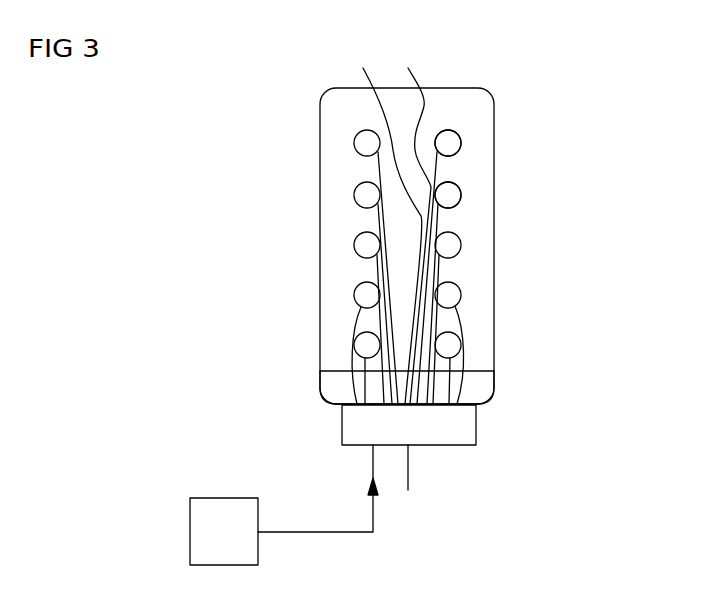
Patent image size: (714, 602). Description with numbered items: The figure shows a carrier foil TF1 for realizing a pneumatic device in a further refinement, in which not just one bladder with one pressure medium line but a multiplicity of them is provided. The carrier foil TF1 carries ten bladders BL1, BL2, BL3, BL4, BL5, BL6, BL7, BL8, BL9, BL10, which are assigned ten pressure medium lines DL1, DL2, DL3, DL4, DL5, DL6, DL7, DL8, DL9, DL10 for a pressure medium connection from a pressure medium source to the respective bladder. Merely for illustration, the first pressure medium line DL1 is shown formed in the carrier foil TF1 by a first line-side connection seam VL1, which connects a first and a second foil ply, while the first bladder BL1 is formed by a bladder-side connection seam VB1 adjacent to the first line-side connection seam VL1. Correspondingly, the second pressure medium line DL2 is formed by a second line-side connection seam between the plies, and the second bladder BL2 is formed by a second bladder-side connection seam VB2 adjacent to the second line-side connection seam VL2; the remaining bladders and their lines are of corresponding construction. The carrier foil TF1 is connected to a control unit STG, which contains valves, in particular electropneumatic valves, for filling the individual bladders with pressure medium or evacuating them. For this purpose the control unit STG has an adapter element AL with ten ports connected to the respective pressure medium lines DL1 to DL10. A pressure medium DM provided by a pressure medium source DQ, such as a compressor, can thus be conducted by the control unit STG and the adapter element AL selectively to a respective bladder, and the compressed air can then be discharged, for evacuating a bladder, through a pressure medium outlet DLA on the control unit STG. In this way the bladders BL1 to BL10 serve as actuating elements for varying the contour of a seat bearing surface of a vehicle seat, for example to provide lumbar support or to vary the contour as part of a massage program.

The carrier foil TF1 is at (478, 117).
The first line-side connection seam VL1 is at (411, 222).
The second line-side connection seam VL2 is at (378, 222).
The bladder-side connection seam VB1 is at (443, 138).
The second bladder-side connection seam VB2 is at (447, 200).
The first bladder BL1 is at (453, 143).
The second bladder BL2 is at (453, 195).
The third bladder BL3 is at (453, 245).
The fourth bladder BL4 is at (453, 295).
The fifth bladder BL5 is at (453, 345).
The sixth bladder BL6 is at (363, 144).
The seventh bladder BL7 is at (363, 196).
The eighth bladder BL8 is at (363, 246).
The ninth bladder BL9 is at (363, 296).
The tenth bladder BL10 is at (363, 346).
The first pressure medium line DL1 is at (433, 168).
The second pressure medium line DL2 is at (428, 222).
The third pressure medium line DL3 is at (434, 266).
The fourth pressure medium line DL4 is at (432, 322).
The fifth pressure medium line DL5 is at (462, 390).
The sixth pressure medium line DL6 is at (376, 163).
The seventh pressure medium line DL7 is at (376, 213).
The eighth pressure medium line DL8 is at (376, 263).
The ninth pressure medium line DL9 is at (376, 313).
The tenth pressure medium line DL10 is at (322, 377).
The adapter element AL is at (328, 389).
The control unit STG is at (465, 424).
The pressure medium outlet DLA is at (408, 473).
The pressure medium DM is at (318, 488).
The pressure medium source DQ is at (203, 532).